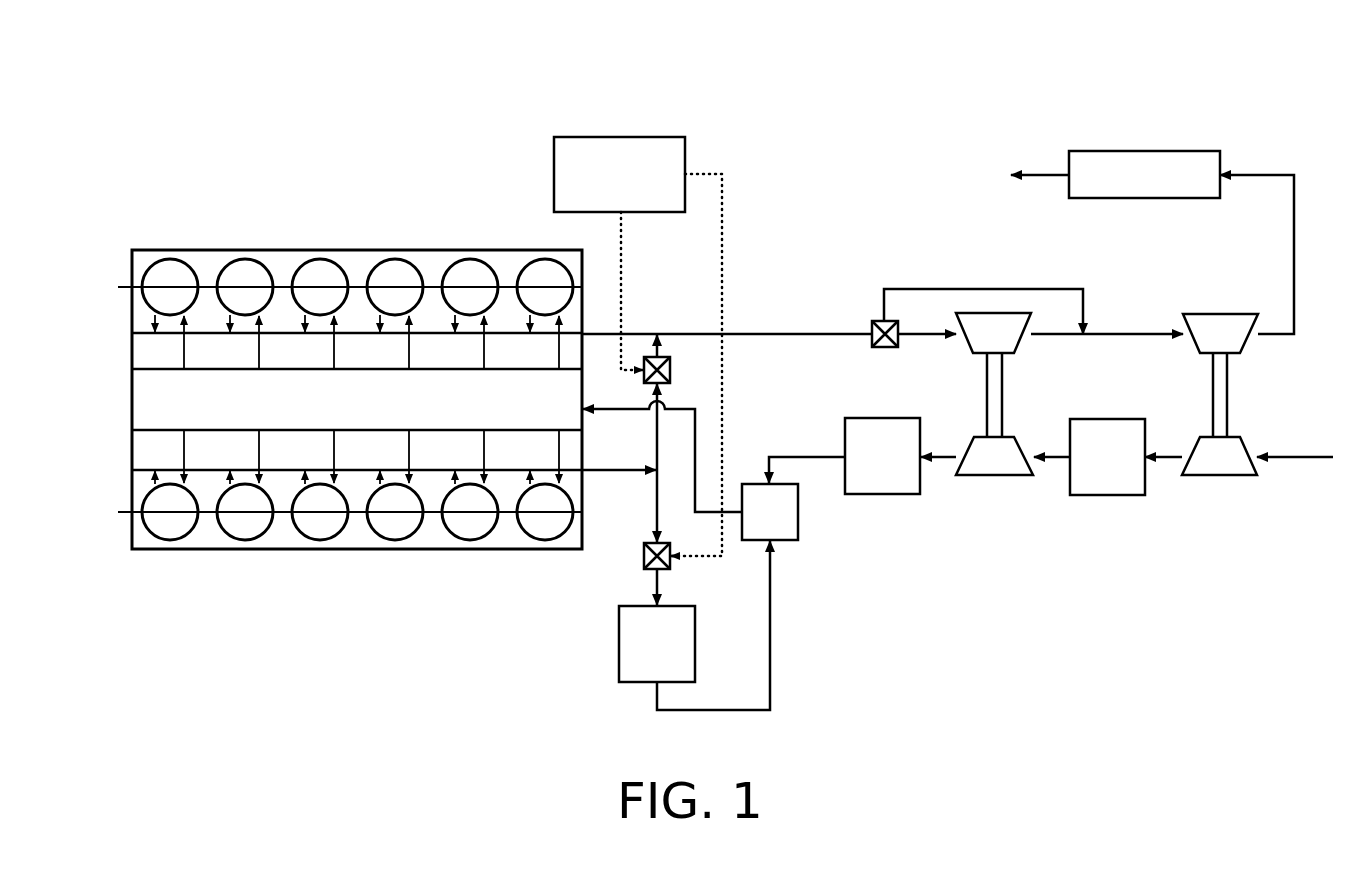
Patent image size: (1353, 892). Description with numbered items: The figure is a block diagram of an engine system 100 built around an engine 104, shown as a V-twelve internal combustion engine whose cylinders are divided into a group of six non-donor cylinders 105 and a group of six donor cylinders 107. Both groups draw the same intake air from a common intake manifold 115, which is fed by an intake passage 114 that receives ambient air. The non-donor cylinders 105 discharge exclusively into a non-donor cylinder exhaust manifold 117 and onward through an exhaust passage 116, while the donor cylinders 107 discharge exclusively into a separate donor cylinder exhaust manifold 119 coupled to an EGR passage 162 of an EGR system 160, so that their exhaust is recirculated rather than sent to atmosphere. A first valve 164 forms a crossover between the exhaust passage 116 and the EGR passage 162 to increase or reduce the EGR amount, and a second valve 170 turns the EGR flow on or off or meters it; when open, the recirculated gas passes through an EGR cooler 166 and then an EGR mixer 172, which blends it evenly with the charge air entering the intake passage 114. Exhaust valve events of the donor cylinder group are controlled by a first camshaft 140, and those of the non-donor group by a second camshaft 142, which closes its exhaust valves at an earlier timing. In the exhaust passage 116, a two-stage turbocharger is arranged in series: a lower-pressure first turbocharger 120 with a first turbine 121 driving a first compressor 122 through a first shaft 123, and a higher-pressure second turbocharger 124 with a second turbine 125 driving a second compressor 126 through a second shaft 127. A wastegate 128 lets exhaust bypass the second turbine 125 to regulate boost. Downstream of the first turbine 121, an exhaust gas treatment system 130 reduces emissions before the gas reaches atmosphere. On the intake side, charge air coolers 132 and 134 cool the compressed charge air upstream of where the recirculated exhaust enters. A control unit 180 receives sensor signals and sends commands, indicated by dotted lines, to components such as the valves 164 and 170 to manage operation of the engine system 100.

The engine system 100 is at (853, 96).
The engine 104 is at (118, 529).
The non-donor cylinders 105 is at (320, 259).
The donor cylinders 107 is at (318, 541).
The intake passage 114 is at (1275, 460).
The intake manifold 115 is at (357, 399).
The exhaust passage 116 is at (766, 333).
The non-donor cylinder exhaust manifold 117 is at (132, 333).
The donor cylinder exhaust manifold 119 is at (132, 470).
The first turbocharger 120 is at (1221, 493).
The first turbine 121 is at (1238, 264).
The first compressor 122 is at (1201, 456).
The first shaft 123 is at (1228, 415).
The second turbocharger 124 is at (999, 491).
The second turbine 125 is at (993, 333).
The second compressor 126 is at (994, 456).
The second shaft 127 is at (1003, 415).
The wastegate 128 is at (898, 332).
The exhaust gas treatment system 130 is at (1115, 174).
The charge air cooler 132 is at (1089, 457).
The charge air cooler 134 is at (862, 456).
The first camshaft 140 is at (120, 511).
The second camshaft 142 is at (120, 286).
The EGR system 160 is at (797, 645).
The EGR passage 162 is at (660, 507).
The first valve 164 is at (671, 370).
The EGR cooler 166 is at (694, 625).
The second valve 170 is at (644, 553).
The EGR mixer 172 is at (690, 470).
The control unit 180 is at (638, 346).